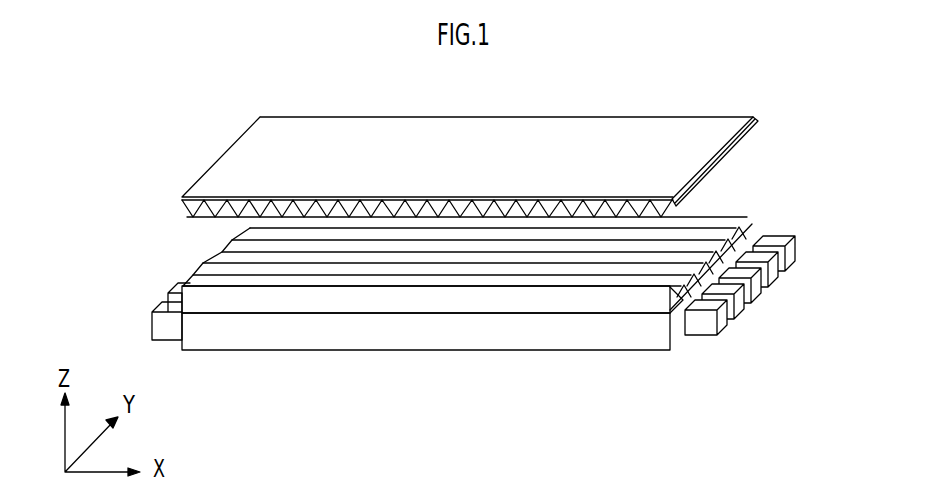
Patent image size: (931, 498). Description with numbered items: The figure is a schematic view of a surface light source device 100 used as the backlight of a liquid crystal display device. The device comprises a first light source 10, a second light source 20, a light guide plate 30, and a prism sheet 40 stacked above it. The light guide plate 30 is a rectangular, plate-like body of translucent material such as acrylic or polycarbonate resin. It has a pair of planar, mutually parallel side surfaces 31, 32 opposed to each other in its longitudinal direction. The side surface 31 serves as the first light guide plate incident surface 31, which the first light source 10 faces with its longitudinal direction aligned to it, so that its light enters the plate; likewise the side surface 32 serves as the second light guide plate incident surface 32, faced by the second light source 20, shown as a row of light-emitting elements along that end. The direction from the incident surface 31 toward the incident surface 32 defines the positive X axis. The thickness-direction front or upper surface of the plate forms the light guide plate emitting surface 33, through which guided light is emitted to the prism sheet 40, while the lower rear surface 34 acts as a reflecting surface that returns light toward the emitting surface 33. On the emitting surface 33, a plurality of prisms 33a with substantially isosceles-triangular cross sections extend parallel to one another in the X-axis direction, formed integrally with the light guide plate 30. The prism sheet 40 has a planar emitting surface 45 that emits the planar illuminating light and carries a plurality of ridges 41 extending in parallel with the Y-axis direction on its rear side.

The surface light source device 100 is at (682, 70).
The prism sheet 40 is at (223, 131).
The emitting surface 45 is at (512, 135).
The ridges 41 is at (732, 162).
The first light source 10 is at (190, 255).
The light guide plate 30 is at (209, 252).
The prisms 33a is at (701, 232).
The light guide plate emitting surface 33 is at (463, 300).
The rear surface 34 is at (372, 352).
The first light guide plate incident surface 31 is at (182, 348).
The second light guide plate incident surface 32 is at (679, 332).
The second light source 20 is at (800, 272).